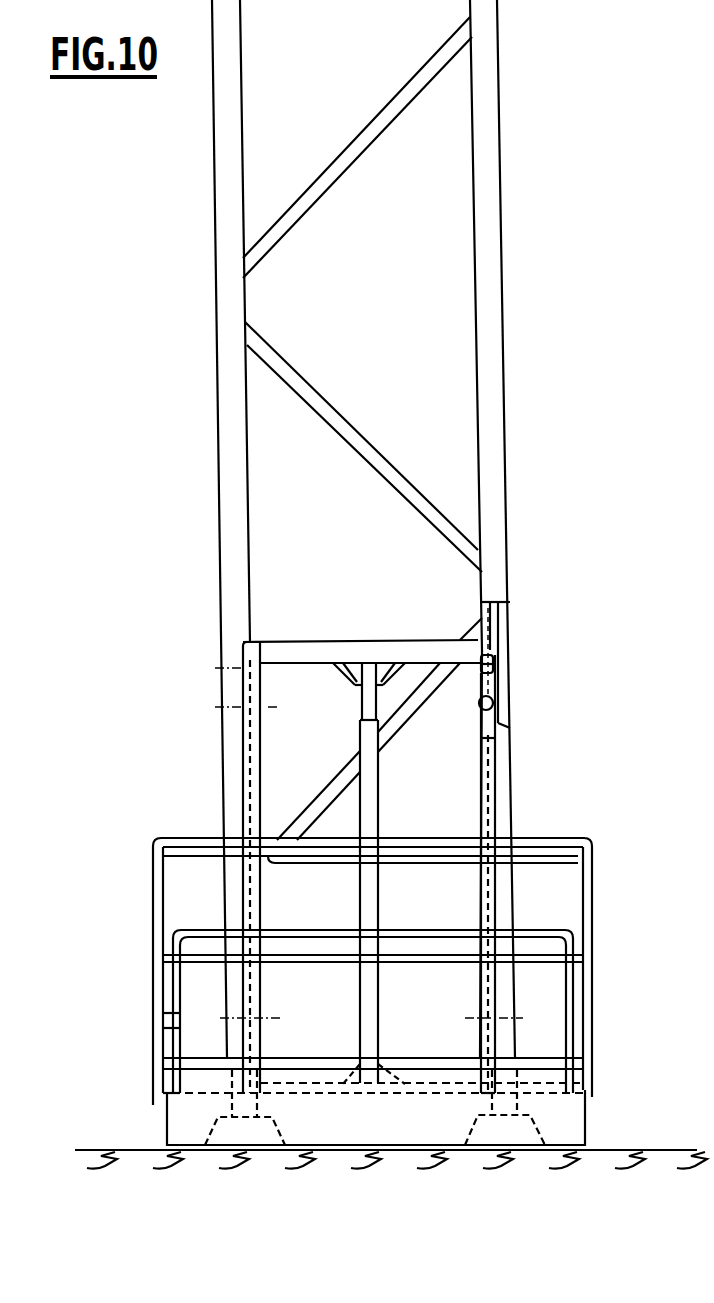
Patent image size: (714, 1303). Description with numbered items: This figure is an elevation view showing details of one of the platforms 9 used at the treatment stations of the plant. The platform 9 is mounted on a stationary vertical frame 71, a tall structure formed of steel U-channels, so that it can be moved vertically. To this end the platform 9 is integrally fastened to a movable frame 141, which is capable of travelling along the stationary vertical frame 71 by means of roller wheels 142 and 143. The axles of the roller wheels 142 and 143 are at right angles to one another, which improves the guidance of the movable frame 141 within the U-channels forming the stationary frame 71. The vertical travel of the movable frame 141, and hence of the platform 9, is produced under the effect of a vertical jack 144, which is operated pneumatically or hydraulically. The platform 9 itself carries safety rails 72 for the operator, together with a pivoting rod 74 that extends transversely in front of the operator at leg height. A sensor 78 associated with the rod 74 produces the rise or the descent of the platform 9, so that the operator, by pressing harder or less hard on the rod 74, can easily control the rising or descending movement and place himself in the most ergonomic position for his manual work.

The stationary vertical frame 71 is at (488, 363).
The safety rails 72 is at (587, 892).
The pivoting rod 74 is at (190, 930).
The sensor 78 is at (167, 1026).
The platform 9 is at (555, 1118).
The movable frame 141 is at (481, 772).
The roller wheel 142 is at (494, 666).
The roller wheel 143 is at (493, 703).
The vertical jack 144 is at (372, 778).